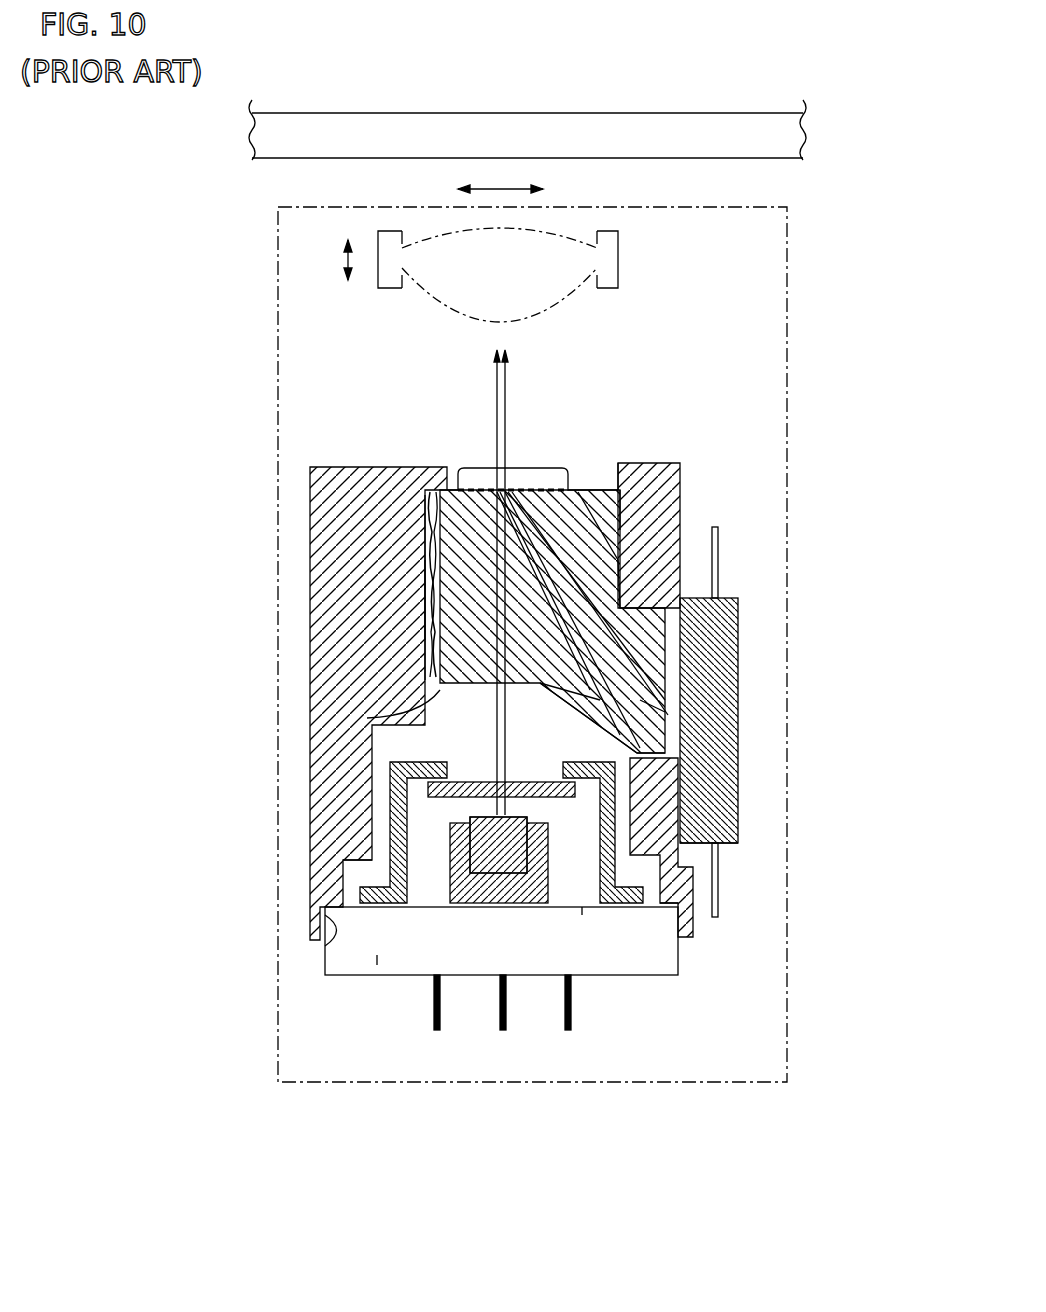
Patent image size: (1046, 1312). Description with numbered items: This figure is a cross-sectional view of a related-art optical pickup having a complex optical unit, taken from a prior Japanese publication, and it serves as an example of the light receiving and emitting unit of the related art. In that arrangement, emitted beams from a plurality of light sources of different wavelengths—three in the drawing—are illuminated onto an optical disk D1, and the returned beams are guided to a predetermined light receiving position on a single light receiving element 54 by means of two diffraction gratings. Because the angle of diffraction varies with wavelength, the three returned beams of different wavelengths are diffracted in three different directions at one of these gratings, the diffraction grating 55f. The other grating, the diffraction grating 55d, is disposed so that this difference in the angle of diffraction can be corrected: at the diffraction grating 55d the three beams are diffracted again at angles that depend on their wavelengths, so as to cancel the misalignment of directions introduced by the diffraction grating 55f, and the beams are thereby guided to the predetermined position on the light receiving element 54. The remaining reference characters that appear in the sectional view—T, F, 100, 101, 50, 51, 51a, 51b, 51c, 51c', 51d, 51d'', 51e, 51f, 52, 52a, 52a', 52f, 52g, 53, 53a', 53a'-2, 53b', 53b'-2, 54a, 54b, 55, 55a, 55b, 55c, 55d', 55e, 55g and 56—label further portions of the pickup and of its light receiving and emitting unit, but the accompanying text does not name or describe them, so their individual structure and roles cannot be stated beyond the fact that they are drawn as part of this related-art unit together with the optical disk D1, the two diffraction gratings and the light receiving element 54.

The optical disk D1 is at (638, 137).
The tracking direction T is at (510, 188).
The focusing direction F is at (345, 258).
The optical pickup 100 is at (790, 292).
The objective lens 101 is at (618, 250).
The laser module 50 is at (310, 512).
The housing 51 is at (310, 479).
The housing step 51a is at (355, 872).
The housing projection 51b is at (320, 935).
The housing inner wall 51c is at (317, 587).
The housing inner wall portion 51c' is at (410, 543).
The housing right wall 51d is at (738, 700).
The housing wall portion 51d'' is at (699, 507).
The housing lower portion 51e is at (695, 878).
The housing top surface 51f is at (602, 465).
The base plate 52 is at (680, 950).
The base plate body 52a is at (369, 998).
The base plate mounting portion 52a' is at (607, 968).
The holder 52f is at (395, 770).
The lead pins 52g is at (437, 1030).
The photodetector 53 is at (458, 855).
The laser beam 53a' is at (551, 575).
The reflected laser beam 53a'-2 is at (376, 596).
The laser beam 53b' is at (444, 576).
The reflected laser beam 53b'-2 is at (686, 620).
The light receiving element 54 is at (740, 648).
The laser bottom surface 54a is at (742, 828).
The laser lead pins 54b is at (720, 535).
The optical block 55 is at (663, 557).
The optical block lower surface 55a is at (420, 705).
The optical block side surface 55b is at (620, 470).
The optical block notch 55c is at (610, 502).
The diffraction grating 55d is at (528, 718).
The inclined surface 55d' is at (743, 767).
The reflecting surface 55e is at (668, 704).
The diffraction grating 55f is at (520, 465).
The glass plate 55g is at (562, 780).
The adhesive 56 is at (460, 612).